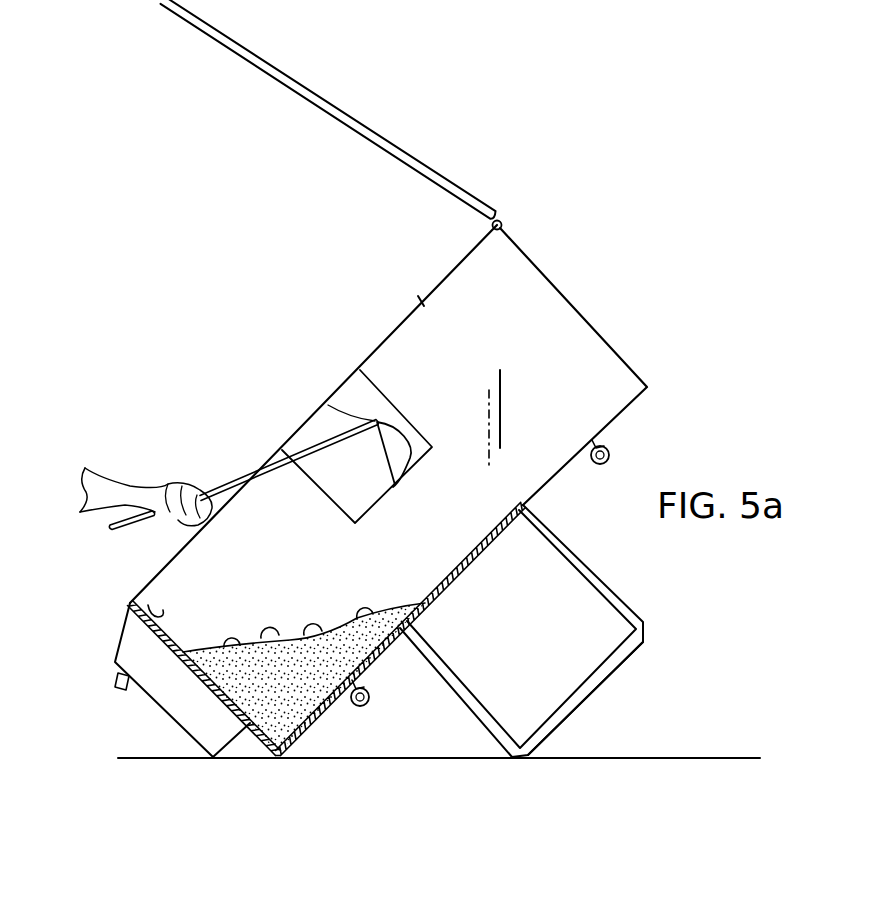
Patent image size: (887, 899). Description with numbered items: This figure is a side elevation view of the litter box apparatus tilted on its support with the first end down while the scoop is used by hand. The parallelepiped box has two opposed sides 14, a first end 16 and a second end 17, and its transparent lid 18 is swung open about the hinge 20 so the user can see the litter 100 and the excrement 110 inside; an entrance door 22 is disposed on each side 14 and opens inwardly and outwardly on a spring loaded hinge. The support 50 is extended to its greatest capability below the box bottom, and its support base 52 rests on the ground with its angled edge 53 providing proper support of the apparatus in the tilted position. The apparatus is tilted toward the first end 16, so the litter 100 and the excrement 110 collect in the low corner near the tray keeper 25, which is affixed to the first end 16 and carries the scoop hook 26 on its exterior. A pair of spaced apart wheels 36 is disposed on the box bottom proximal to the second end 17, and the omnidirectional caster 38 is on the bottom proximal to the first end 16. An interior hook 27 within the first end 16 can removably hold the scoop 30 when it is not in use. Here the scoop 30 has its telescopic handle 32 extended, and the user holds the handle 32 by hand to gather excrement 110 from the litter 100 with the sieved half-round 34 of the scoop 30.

The side 14 is at (422, 303).
The first end 16 is at (243, 738).
The second end 17 is at (585, 310).
The transparent lid 18 is at (430, 167).
The hinge 20 is at (510, 228).
The entrance door 22 is at (393, 378).
The tray keeper 25 is at (143, 705).
The scoop hook 26 is at (115, 685).
The interior hook 27 is at (175, 605).
The scoop 30 is at (357, 447).
The telescopic handle 32 is at (260, 450).
The half-round 34 is at (402, 480).
The wheels 36 is at (612, 452).
The omnidirectional caster 38 is at (372, 705).
The support 50 is at (648, 598).
The support base 52 is at (627, 660).
The angled edge 53 is at (439, 792).
The litter 100 is at (313, 758).
The excrement 110 is at (307, 615).